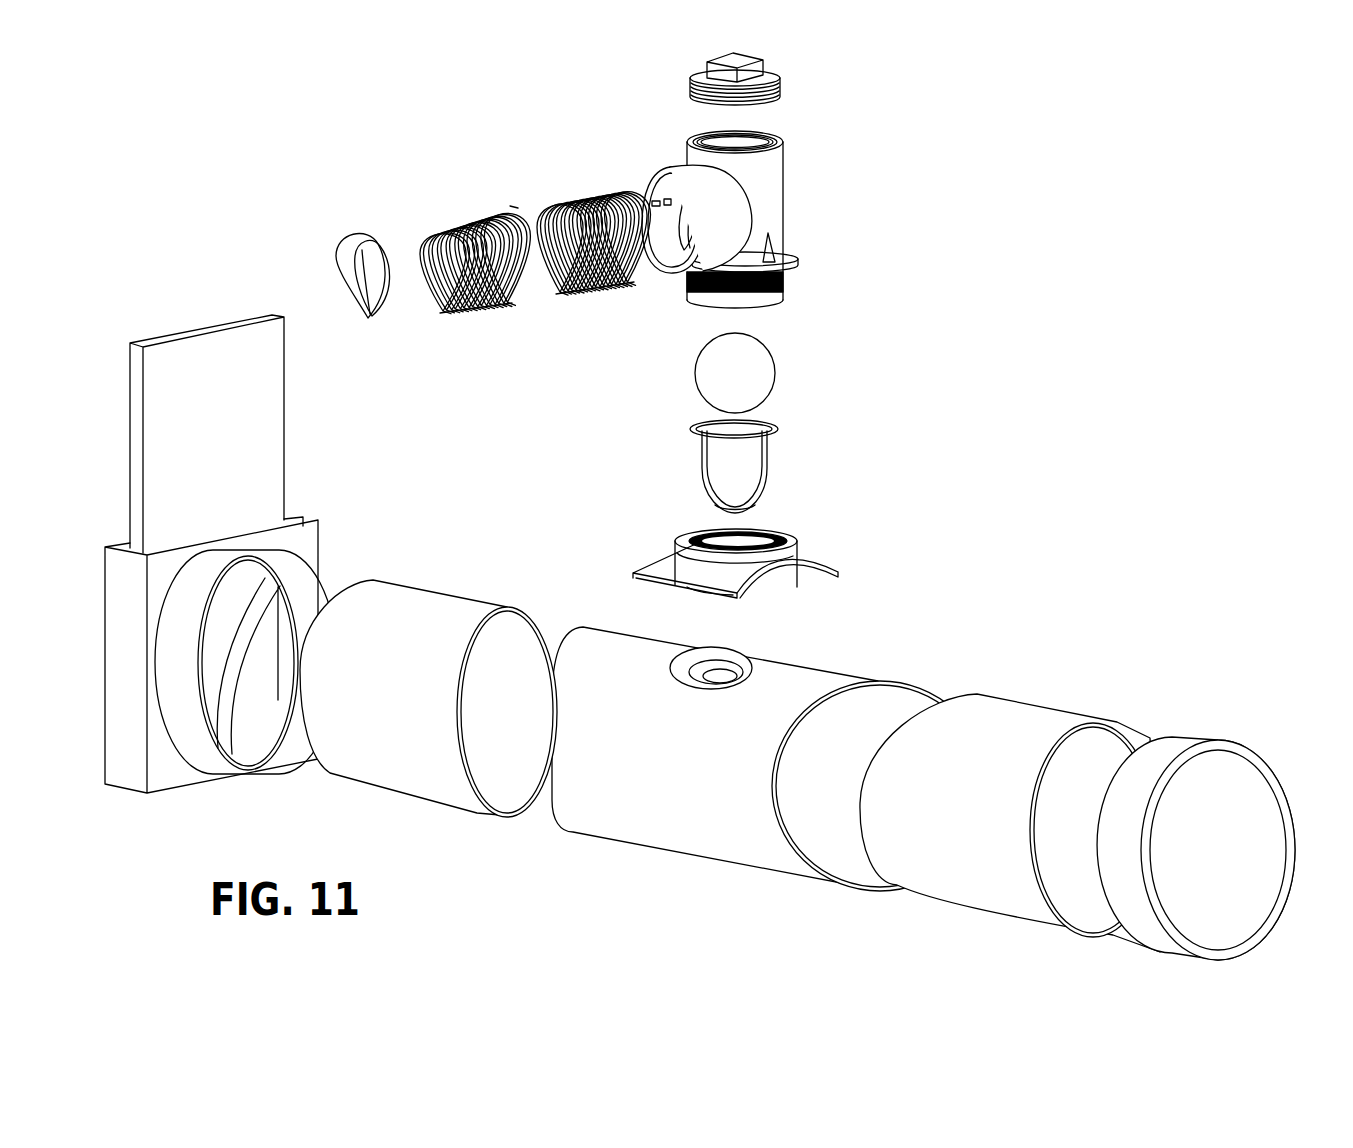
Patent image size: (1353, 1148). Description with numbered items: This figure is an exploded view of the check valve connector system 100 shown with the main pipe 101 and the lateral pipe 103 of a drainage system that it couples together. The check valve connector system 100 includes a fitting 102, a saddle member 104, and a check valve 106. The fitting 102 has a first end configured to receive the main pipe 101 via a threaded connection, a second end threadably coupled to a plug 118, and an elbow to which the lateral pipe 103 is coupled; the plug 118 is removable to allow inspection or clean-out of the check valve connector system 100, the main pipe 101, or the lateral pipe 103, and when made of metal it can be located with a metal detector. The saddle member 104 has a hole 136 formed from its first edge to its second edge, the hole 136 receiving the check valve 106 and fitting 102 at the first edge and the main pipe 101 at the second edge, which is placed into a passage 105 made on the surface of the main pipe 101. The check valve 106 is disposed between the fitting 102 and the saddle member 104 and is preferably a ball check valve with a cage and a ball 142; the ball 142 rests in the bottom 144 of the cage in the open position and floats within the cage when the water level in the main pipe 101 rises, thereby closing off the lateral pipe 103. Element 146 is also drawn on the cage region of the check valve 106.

The check valve connector system 100 is at (867, 45).
The main pipe 101 is at (700, 637).
The fitting 102 is at (773, 208).
The lateral pipe 103 is at (470, 215).
The saddle member 104 is at (715, 540).
The passage 105 is at (717, 677).
The check valve 106 is at (626, 330).
The plug 118 is at (775, 75).
The hole 136 is at (777, 533).
The ball 142 is at (762, 377).
The bottom 144 is at (714, 508).
The cage wall 146 is at (777, 427).